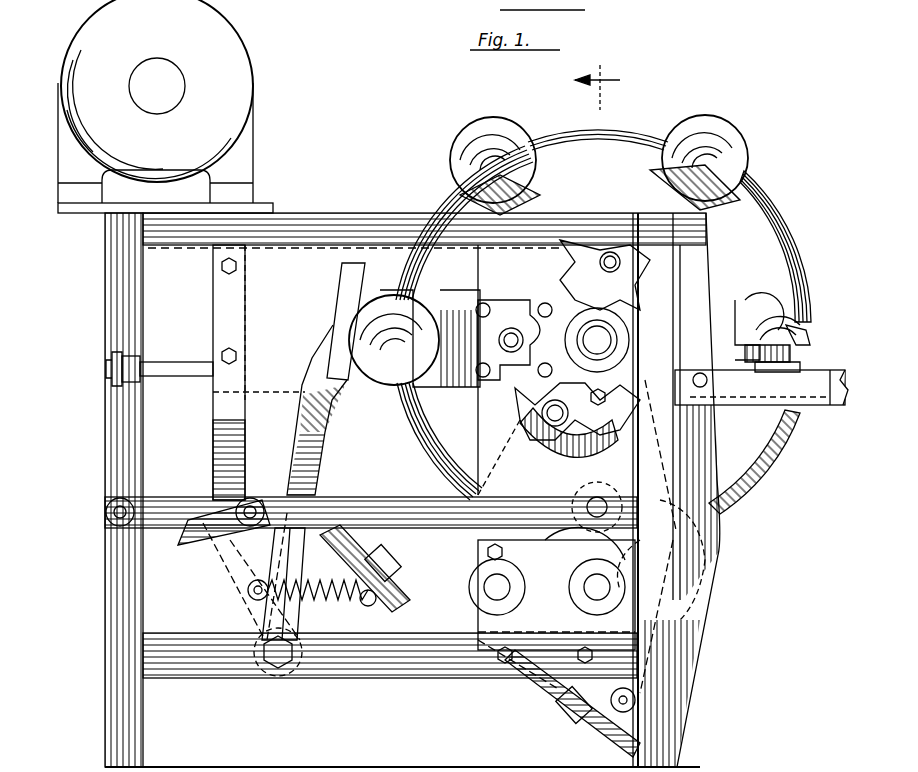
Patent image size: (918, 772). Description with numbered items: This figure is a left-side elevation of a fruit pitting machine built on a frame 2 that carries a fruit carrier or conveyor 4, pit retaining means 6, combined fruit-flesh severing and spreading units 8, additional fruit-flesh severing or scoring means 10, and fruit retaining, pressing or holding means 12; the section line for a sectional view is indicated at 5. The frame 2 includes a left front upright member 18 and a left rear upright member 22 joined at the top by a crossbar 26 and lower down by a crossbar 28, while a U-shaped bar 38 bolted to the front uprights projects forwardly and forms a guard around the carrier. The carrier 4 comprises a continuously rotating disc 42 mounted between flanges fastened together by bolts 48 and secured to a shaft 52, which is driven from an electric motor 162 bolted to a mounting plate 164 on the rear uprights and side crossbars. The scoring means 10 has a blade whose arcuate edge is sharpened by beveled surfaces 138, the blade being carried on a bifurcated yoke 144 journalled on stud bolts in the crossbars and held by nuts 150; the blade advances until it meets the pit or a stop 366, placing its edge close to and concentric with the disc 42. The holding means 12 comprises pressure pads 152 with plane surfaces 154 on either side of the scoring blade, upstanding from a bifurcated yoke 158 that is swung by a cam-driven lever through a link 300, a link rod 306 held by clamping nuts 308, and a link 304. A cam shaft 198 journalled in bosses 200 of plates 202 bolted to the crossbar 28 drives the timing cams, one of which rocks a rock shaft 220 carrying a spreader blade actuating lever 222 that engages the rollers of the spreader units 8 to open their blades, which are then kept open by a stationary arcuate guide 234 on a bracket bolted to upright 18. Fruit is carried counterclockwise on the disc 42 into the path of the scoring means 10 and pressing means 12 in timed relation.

The frame 2 is at (312, 195).
The fruit carrier or conveyor 4 is at (770, 440).
The section line 5 is at (606, 87).
The pit retaining means 6 is at (798, 332).
The fruit-flesh severing and spreading units 8 is at (636, 180).
The fruit-flesh severing or scoring means 10 is at (330, 240).
The fruit retaining, pressing or holding means 12 is at (332, 420).
The left front upright member 18 is at (665, 640).
The left rear upright member 22 is at (112, 706).
The crossbar 26 is at (385, 222).
The crossbar 28 is at (362, 678).
The U-shaped bar 38 is at (818, 405).
The disc 42 is at (745, 250).
The bolts 48 is at (545, 305).
The shaft 52 is at (597, 330).
The beveled surfaces 138 is at (295, 615).
The bifurcated lever or yoke 144 is at (220, 448).
The nuts 150 is at (275, 660).
The pressure pads 152 is at (345, 282).
The plane surfaces 154 is at (345, 300).
The bifurcated carrier arm or yoke 158 is at (300, 450).
The electric motor 162 is at (225, 40).
The mounting plate 164 is at (250, 210).
The cam shaft 198 is at (600, 588).
The bosses 200 is at (660, 578).
The plates 202 is at (535, 670).
The rock shaft 220 is at (497, 587).
The spreader blade actuating lever 222 is at (462, 300).
The stationary arcuate guide 234 is at (556, 484).
The link 300 is at (610, 735).
The link 304 is at (340, 545).
The link rod 306 is at (555, 705).
The clamping nuts 308 is at (395, 570).
The stop 366 is at (185, 378).